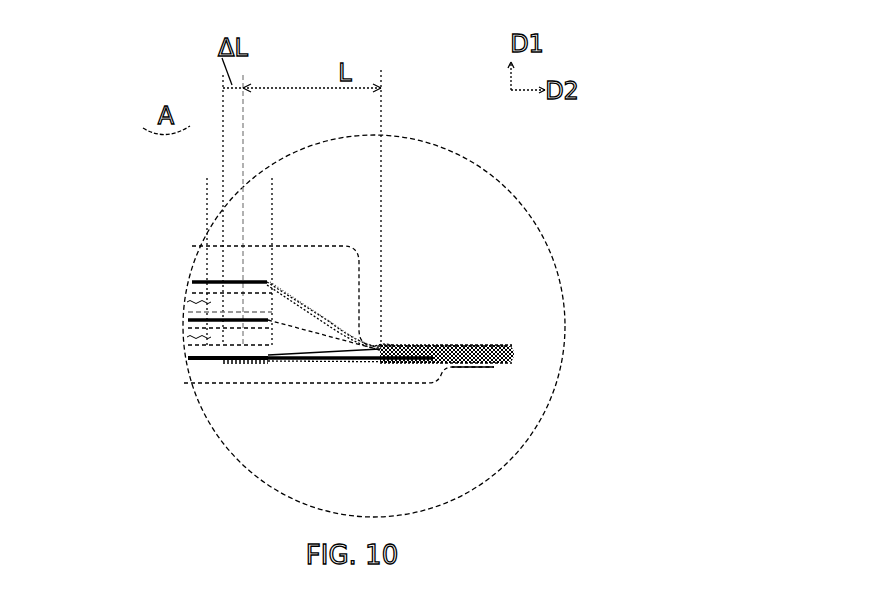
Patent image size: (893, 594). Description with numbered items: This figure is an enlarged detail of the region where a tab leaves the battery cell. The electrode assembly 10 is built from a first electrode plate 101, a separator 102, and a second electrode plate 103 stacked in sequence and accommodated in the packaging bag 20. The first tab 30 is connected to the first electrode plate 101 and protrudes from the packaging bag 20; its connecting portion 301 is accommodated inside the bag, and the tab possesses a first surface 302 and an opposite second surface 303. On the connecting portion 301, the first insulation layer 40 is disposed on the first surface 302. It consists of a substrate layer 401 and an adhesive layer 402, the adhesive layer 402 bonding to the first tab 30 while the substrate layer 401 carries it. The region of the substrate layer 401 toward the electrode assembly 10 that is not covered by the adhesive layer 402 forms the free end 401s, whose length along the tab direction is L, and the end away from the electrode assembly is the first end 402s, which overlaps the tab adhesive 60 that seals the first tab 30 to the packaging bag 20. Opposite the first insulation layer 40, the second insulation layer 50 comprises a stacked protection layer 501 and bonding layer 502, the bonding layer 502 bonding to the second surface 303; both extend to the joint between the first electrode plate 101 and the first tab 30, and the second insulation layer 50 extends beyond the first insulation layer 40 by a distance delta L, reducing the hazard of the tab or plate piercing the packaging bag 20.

The electrode assembly 10 is at (107, 327).
The first electrode plate 101 is at (203, 359).
The separator 102 is at (200, 346).
The second electrode plate 103 is at (187, 335).
The packaging bag 20 is at (318, 385).
The first tab 30 is at (520, 353).
The connecting portion 301 is at (318, 325).
The first surface 302 is at (520, 353).
The second surface 303 is at (520, 353).
The first insulation layer 40 is at (532, 170).
The substrate layer 401 is at (405, 346).
The adhesive layer 402 is at (423, 347).
The free end 401s is at (270, 292).
The first end 402s is at (398, 345).
The second insulation layer 50 is at (432, 470).
The protection layer 501 is at (340, 362).
The bonding layer 502 is at (390, 362).
The tab adhesive 60 is at (493, 368).